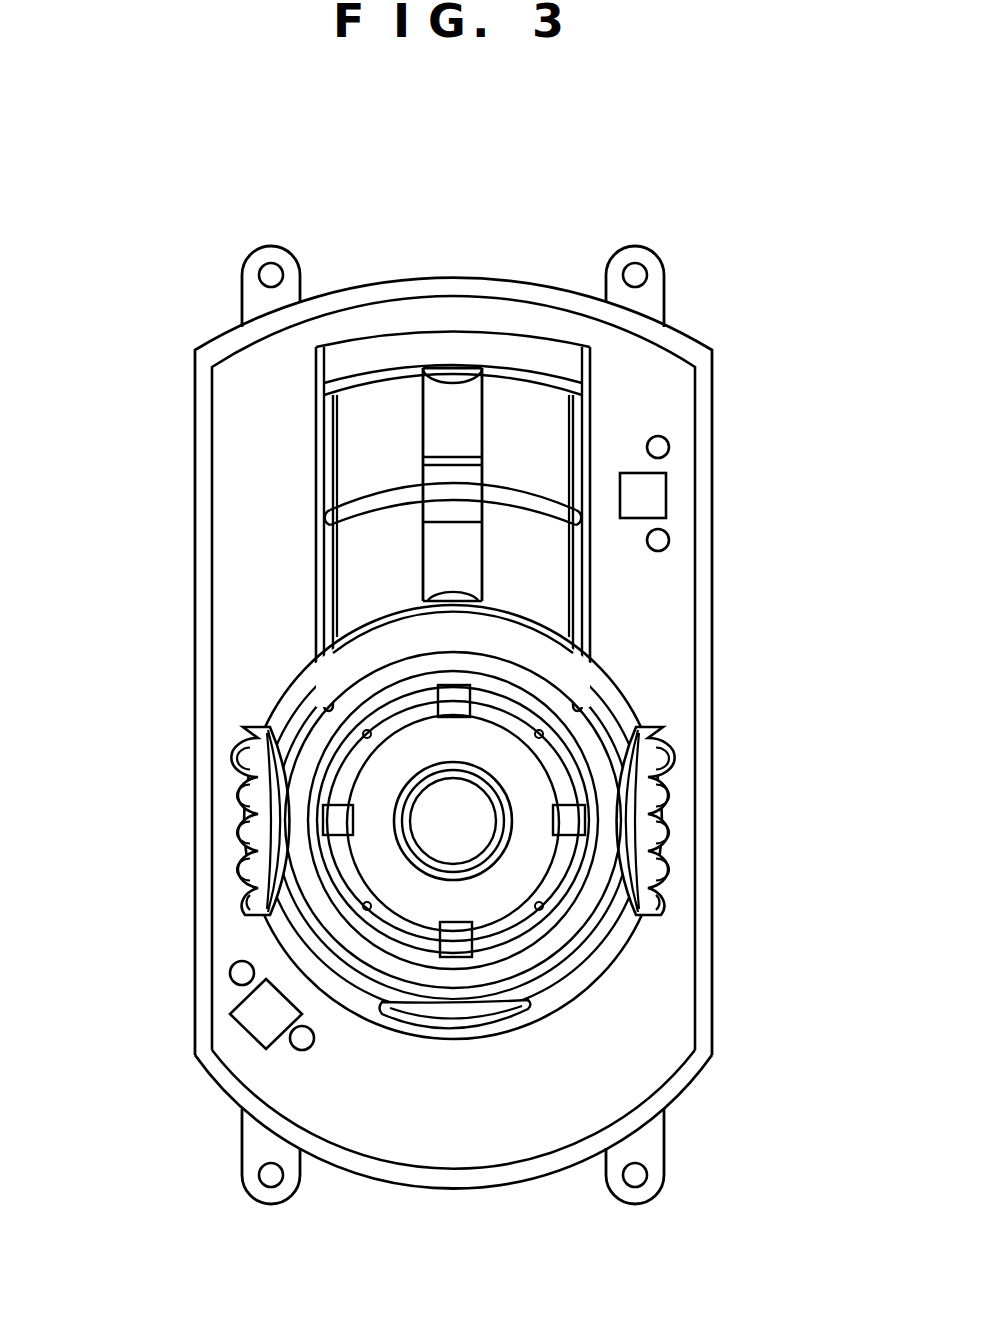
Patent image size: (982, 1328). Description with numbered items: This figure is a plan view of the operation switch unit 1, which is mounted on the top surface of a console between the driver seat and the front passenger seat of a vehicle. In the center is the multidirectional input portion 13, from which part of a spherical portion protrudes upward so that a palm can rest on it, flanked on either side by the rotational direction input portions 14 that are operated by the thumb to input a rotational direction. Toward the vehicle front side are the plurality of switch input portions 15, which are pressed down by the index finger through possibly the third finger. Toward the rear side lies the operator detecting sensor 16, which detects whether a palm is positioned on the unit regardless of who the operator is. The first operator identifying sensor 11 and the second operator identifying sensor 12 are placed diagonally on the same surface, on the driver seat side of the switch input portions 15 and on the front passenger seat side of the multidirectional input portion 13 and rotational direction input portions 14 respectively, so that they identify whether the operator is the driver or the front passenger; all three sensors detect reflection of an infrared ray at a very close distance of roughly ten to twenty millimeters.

The operation switch unit 1 is at (133, 265).
The first operator identifying sensor 11 is at (666, 488).
The second operator identifying sensor 12 is at (232, 1013).
The multidirectional input portion 13 is at (523, 763).
The rotational direction input portions 14 is at (648, 787).
The switch input portions 15 is at (383, 405).
The operator detecting sensor 16 is at (468, 1015).